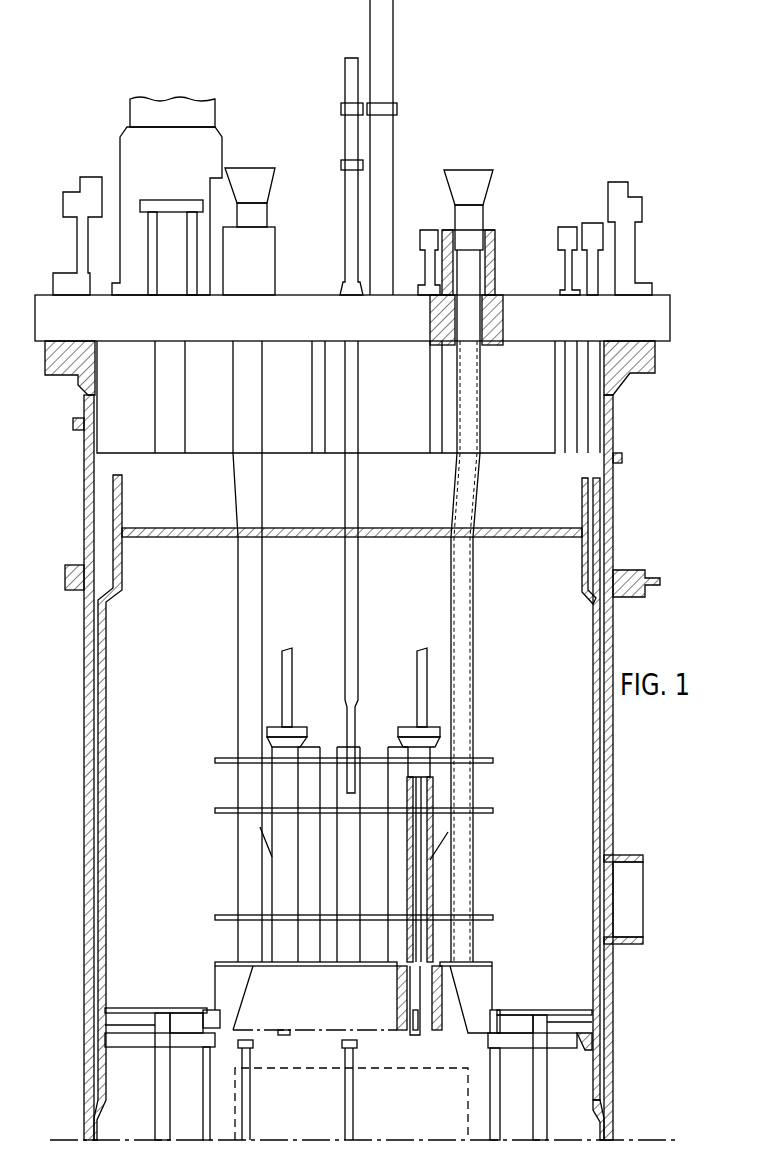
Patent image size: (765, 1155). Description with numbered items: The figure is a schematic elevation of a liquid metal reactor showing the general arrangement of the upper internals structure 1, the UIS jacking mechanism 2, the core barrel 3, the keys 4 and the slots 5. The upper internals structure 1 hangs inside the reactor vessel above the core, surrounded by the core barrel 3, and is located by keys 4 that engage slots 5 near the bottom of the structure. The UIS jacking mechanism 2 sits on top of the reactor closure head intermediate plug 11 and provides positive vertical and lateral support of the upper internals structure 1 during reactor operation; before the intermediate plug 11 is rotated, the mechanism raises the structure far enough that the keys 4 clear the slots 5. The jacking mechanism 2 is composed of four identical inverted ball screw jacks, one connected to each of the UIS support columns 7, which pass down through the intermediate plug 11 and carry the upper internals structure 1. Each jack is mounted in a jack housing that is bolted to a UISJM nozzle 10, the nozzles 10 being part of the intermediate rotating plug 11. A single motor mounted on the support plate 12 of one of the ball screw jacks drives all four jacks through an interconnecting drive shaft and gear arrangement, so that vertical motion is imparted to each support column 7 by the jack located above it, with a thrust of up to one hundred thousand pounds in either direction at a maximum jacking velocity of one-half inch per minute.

The upper internals structure 1 is at (250, 785).
The UIS jacking mechanism 2 is at (278, 252).
The core barrel 3 is at (106, 680).
The keys 4 is at (208, 1023).
The slots 5 is at (197, 1016).
The UIS support columns 7 is at (262, 616).
The UISJM nozzle 10 is at (496, 285).
The reactor closure head intermediate plug 11 is at (311, 308).
The support plate 12 is at (422, 290).